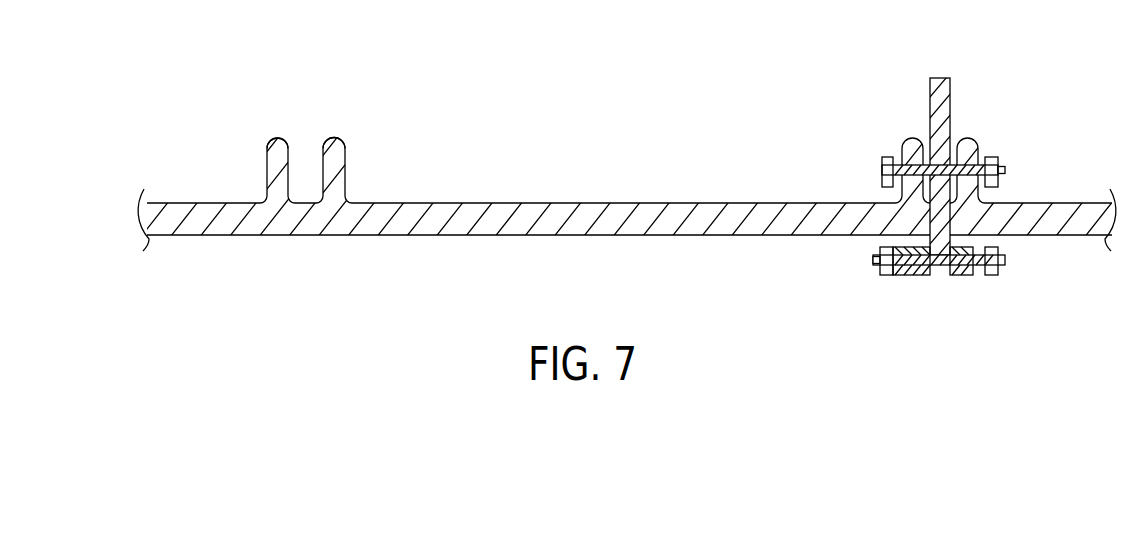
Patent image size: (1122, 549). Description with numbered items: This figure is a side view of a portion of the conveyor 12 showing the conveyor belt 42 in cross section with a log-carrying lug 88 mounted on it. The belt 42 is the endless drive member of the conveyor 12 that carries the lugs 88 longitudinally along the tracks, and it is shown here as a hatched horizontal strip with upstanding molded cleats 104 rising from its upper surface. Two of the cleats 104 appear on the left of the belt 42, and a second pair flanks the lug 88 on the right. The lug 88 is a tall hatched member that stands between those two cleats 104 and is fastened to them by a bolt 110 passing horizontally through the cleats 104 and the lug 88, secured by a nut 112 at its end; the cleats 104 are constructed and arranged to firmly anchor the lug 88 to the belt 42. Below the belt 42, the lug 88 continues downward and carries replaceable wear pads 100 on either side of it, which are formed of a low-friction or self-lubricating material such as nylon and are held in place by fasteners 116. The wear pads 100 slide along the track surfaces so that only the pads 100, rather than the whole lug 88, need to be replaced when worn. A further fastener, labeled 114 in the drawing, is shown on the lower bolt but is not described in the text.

The conveyor 12 is at (587, 143).
The conveyor belt 42 is at (597, 205).
The molded cleats 104 is at (361, 100).
The log-carrying lug 88 is at (950, 95).
The bolts 110 is at (1006, 169).
The nuts 112 is at (992, 157).
The bolt 114 is at (873, 260).
The fasteners 116 is at (1006, 260).
The wear pads 100 is at (913, 277).